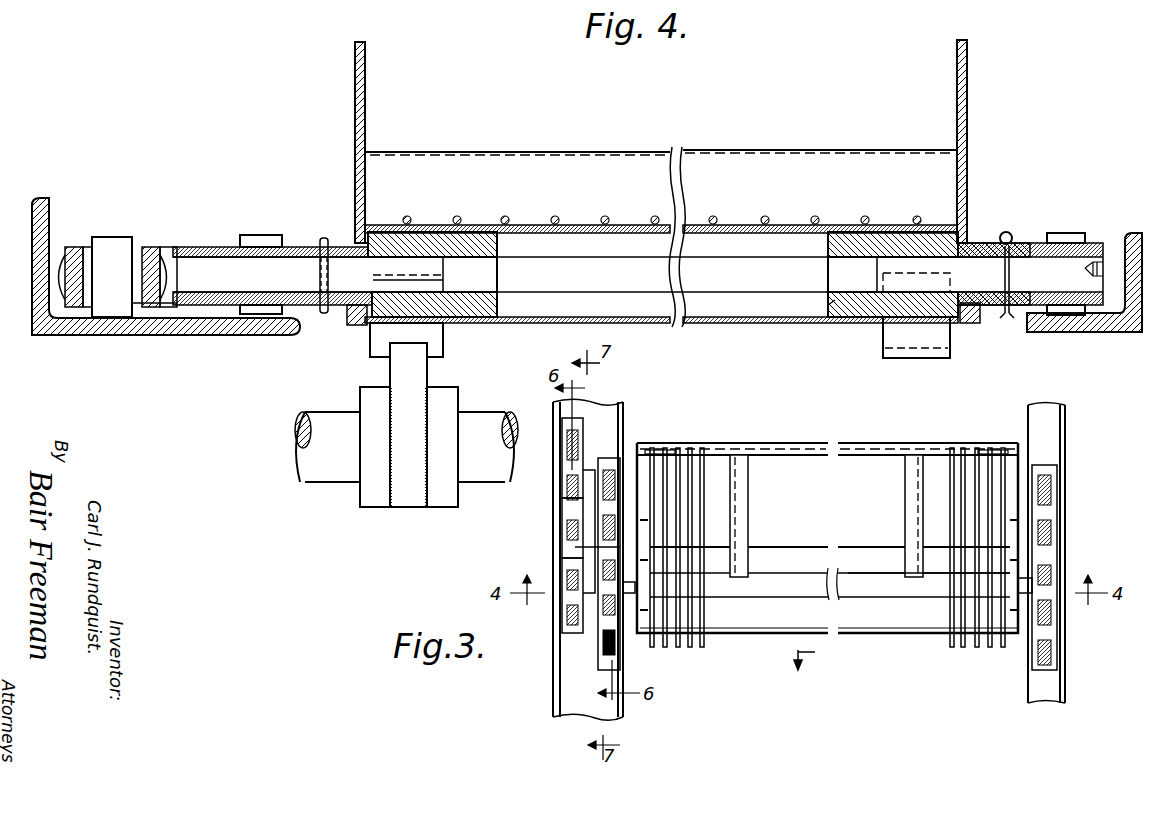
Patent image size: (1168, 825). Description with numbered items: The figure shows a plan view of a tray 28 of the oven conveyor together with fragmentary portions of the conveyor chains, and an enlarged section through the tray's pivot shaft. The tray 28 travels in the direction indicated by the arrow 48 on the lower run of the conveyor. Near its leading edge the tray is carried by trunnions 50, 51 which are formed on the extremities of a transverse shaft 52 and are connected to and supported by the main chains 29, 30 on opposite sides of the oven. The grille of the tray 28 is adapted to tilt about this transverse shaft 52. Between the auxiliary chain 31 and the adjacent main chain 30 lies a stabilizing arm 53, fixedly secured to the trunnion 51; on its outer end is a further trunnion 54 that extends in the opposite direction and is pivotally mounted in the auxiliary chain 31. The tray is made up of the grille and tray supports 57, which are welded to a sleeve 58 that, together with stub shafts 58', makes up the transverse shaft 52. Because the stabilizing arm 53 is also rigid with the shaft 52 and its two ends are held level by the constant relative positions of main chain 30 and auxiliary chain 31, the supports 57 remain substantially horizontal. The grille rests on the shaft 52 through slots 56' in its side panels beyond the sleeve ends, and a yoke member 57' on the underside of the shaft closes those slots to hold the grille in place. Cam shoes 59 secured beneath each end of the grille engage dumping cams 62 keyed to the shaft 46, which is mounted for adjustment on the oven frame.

In FIG. 3, the tray 28 is at (862, 472).
In FIG. 4, the main chain 29 is at (1060, 232).
In FIG. 3, the main chain 29 is at (1055, 660).
In FIG. 4, the main chain 30 is at (256, 234).
In FIG. 3, the main chain 30 is at (600, 653).
In FIG. 4, the auxiliary chain 31 is at (118, 236).
In FIG. 3, the auxiliary chain 31 is at (568, 525).
In FIG. 4, the shaft 46 is at (300, 455).
In FIG. 3, the arrow 48 is at (812, 661).
In FIG. 3, the trunnion 50 is at (1048, 580).
In FIG. 3, the trunnion 51 is at (622, 600).
In FIG. 4, the transverse shaft 52 is at (340, 300).
In FIG. 3, the transverse shaft 52 is at (867, 593).
In FIG. 3, the stabilizing arm 53 is at (575, 553).
In FIG. 3, the trunnion 54 is at (568, 470).
In FIG. 4, the slots 56' is at (671, 259).
In FIG. 3, the tray supports 57 is at (826, 516).
In FIG. 4, the yoke member 57' is at (670, 334).
In FIG. 4, the sleeve 58 is at (661, 290).
In FIG. 4, the stub shafts 58' is at (819, 328).
In FIG. 4, the cam shoes 59 is at (440, 355).
In FIG. 3, the cam shoes 59 is at (648, 456).
In FIG. 4, the dumping cams 62 is at (402, 505).